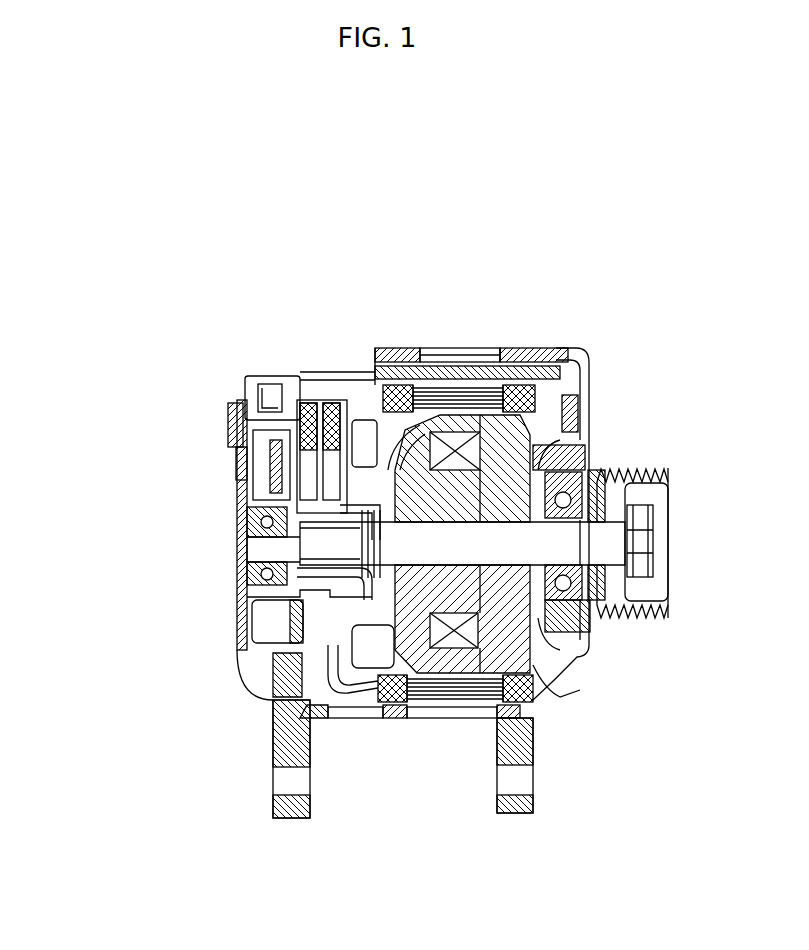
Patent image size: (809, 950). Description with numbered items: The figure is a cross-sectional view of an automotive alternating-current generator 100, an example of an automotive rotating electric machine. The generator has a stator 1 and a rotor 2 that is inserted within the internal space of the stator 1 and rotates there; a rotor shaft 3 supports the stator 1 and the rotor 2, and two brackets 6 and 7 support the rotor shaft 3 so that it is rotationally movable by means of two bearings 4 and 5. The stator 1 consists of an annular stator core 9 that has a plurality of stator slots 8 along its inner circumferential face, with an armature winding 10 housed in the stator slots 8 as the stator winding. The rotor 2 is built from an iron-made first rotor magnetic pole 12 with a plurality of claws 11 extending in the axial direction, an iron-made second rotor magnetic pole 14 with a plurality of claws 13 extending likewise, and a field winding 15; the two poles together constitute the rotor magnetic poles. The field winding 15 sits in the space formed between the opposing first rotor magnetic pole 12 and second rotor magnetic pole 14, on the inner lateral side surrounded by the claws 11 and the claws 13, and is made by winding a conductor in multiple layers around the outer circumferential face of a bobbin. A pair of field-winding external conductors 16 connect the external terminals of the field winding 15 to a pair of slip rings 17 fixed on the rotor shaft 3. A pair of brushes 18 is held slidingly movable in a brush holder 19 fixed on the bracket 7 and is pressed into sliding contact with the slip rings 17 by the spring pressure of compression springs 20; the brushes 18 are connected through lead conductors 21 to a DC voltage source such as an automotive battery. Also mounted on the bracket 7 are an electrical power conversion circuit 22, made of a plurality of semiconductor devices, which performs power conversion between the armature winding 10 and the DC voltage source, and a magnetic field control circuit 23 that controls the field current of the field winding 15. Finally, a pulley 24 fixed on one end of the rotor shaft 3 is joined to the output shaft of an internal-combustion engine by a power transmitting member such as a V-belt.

The automotive alternating-current generator 100 is at (401, 292).
The stator 1 is at (480, 348).
The rotor 2 is at (585, 425).
The rotor shaft 3 is at (583, 543).
The bearing 4 is at (592, 615).
The bearing 5 is at (240, 652).
The bracket 6 is at (592, 655).
The bracket 7 is at (240, 613).
The stator slots 8 is at (450, 348).
The stator core 9 is at (448, 703).
The armature winding 10 is at (500, 350).
The claws 11 is at (595, 370).
The first rotor magnetic pole 12 is at (590, 440).
The claws 13 is at (436, 703).
The second rotor magnetic pole 14 is at (433, 703).
The field winding 15 is at (560, 697).
The field-winding external conductors 16 is at (362, 412).
The slip rings 17 is at (240, 555).
The brushes 18 is at (240, 480).
The brush holder 19 is at (302, 410).
The compression springs 20 is at (232, 440).
The lead conductors 21 is at (258, 410).
The electrical power conversion circuit 22 is at (290, 688).
The magnetic field control circuit 23 is at (240, 453).
The pulley 24 is at (665, 483).